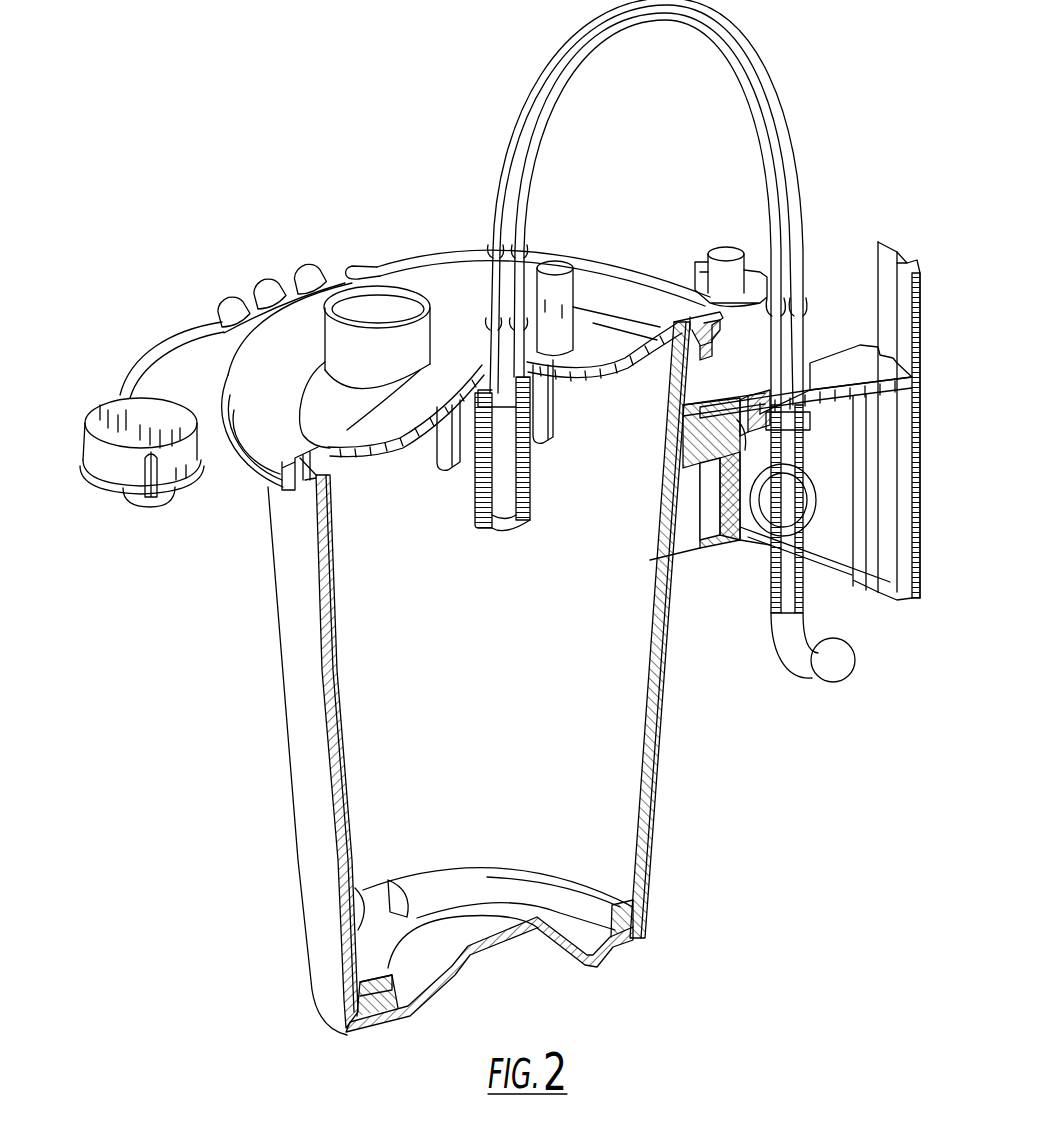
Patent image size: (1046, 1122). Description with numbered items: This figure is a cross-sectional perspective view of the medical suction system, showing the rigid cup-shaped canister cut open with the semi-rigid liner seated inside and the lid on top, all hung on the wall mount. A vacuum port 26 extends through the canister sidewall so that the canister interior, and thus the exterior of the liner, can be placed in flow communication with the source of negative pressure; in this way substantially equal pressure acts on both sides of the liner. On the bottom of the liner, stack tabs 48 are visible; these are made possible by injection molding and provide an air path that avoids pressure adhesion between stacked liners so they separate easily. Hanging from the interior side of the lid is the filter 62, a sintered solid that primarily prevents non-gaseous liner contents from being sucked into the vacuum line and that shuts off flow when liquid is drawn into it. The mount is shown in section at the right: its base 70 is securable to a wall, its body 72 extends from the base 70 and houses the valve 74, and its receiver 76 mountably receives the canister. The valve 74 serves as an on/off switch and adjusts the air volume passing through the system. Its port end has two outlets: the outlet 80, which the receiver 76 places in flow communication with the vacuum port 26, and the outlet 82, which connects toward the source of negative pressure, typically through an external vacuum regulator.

The vacuum port 26 is at (710, 441).
The stack tabs 48 is at (447, 920).
The filter 62 is at (503, 530).
The base 70 is at (890, 233).
The body 72 is at (850, 377).
The valve 74 is at (822, 489).
The receiver 76 is at (717, 491).
The outlet 80 is at (760, 385).
The outlet 82 is at (773, 617).